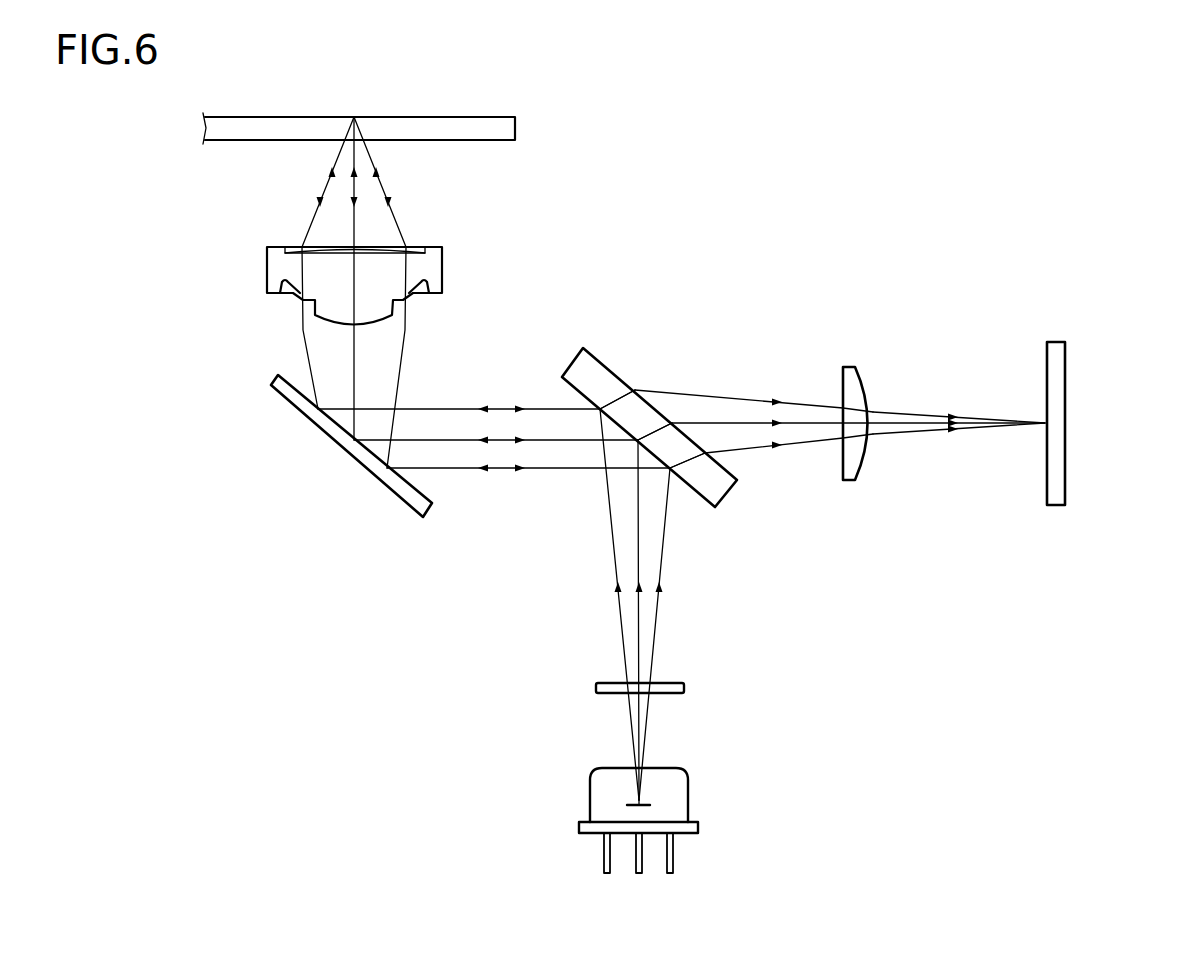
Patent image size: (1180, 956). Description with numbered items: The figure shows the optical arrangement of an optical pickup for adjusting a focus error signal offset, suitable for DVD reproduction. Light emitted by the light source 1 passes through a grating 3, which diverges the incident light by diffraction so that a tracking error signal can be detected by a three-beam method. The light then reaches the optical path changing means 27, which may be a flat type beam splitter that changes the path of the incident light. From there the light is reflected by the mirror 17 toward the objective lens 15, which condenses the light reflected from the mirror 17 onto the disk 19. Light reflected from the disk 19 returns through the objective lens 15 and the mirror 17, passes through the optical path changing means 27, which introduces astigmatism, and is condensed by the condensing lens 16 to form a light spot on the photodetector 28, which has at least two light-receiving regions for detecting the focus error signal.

The light source 1 is at (680, 793).
The grating 3 is at (687, 688).
The objective lens 15 is at (437, 268).
The condensing lens 16 is at (865, 382).
The mirror 17 is at (357, 455).
The disk 19 is at (515, 124).
The optical path changing means 27 is at (610, 367).
The photodetector 28 is at (1062, 362).